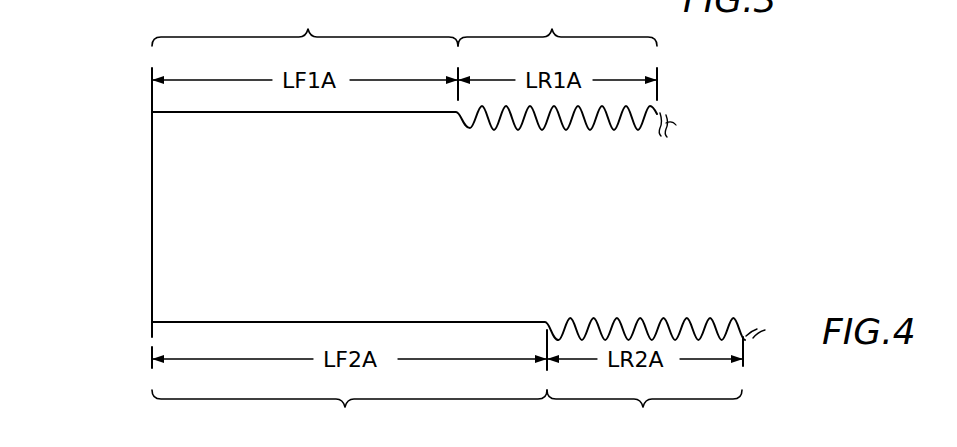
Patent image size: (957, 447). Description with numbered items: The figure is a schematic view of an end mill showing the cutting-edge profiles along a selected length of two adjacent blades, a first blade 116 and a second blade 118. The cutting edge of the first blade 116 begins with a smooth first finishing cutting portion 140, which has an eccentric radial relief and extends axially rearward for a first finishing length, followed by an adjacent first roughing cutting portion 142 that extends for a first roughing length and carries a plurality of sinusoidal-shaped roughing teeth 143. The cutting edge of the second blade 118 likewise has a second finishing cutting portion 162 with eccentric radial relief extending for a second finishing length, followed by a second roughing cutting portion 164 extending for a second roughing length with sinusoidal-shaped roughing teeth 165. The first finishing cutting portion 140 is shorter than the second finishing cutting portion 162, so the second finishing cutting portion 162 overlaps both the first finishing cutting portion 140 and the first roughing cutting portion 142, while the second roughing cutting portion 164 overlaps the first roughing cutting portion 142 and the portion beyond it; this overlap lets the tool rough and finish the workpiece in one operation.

The first blade 116 is at (148, 113).
The second blade 118 is at (150, 322).
The first finishing cutting portion 140 is at (305, 24).
The first roughing cutting portion 142 is at (557, 24).
The roughing teeth 143 is at (658, 112).
The second finishing cutting portion 162 is at (349, 412).
The second roughing cutting portion 164 is at (644, 412).
The roughing teeth 165 is at (739, 320).